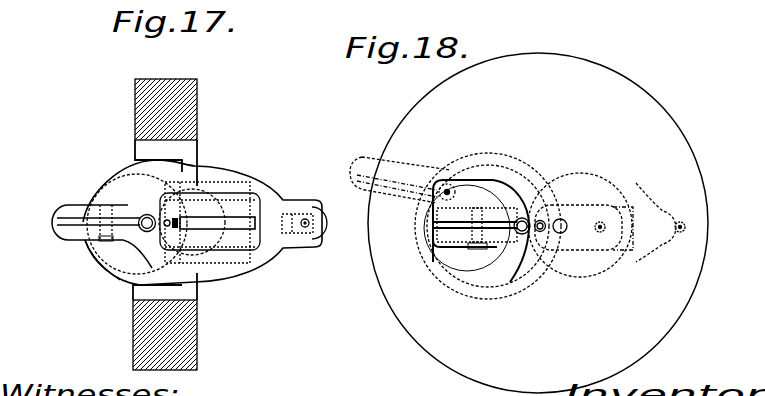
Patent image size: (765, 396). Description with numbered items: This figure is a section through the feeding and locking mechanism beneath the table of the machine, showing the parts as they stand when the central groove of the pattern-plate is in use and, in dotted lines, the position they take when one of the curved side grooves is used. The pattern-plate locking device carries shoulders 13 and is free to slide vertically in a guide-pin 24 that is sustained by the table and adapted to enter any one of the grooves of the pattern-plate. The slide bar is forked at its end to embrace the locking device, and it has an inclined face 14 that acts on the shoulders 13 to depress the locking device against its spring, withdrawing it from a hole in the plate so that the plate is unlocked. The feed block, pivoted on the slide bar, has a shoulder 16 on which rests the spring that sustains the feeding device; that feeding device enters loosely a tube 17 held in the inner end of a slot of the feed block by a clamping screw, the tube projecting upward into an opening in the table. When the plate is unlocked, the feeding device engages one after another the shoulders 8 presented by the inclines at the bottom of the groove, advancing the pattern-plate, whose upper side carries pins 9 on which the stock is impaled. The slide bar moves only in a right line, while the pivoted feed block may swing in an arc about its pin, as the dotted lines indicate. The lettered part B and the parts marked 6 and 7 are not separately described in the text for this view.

In FIG. 17, the pin carrier 6 is at (178, 215).
In FIG. 18, the pin carrier 6 is at (544, 223).
In FIG. 17, the body casing 7 is at (331, 186).
In FIG. 18, the body casing 7 is at (357, 165).
In FIG. 17, the shoulders 8 is at (306, 219).
In FIG. 17, the pins 9 is at (113, 247).
In FIG. 18, the pins 9 is at (460, 178).
In FIG. 17, the shoulders 13 is at (110, 280).
In FIG. 18, the shoulders 13 is at (423, 263).
In FIG. 17, the inclined face 14 is at (106, 204).
In FIG. 18, the inclined face 14 is at (475, 250).
In FIG. 18, the shoulder 16 is at (537, 220).
In FIG. 17, the tube 17 is at (101, 268).
In FIG. 18, the tube 17 is at (515, 250).
In FIG. 18, the guide-pin 24 is at (542, 220).
In FIG. 18, the circular housing B is at (657, 124).